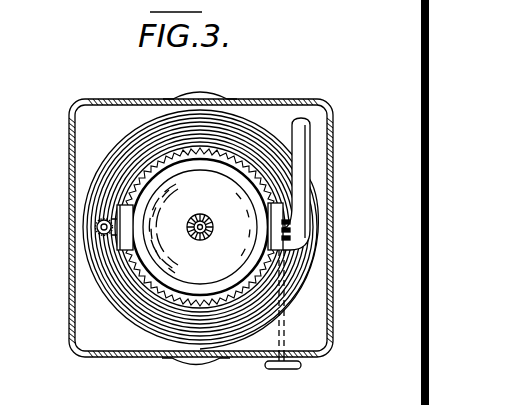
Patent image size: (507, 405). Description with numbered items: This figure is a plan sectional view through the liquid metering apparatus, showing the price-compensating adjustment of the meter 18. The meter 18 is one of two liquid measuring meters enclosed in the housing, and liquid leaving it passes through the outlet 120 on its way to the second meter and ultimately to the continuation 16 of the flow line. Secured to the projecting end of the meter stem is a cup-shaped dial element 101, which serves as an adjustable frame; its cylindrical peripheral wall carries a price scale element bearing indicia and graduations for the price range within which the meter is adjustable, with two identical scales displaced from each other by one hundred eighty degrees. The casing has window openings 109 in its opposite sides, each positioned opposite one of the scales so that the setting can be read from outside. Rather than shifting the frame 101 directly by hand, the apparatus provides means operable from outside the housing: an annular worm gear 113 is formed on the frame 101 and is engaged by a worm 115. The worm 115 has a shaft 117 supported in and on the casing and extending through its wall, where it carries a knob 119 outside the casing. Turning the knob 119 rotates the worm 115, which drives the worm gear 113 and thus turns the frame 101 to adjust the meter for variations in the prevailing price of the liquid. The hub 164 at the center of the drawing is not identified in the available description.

The continuation of the flow line 16 is at (306, 121).
The meter 18 is at (143, 246).
The cup-shaped dial element 101 is at (132, 316).
The window openings 109 is at (222, 91).
The annular worm gear 113 is at (145, 290).
The worm 115 is at (283, 251).
The shaft 117 is at (285, 308).
The knob 119 is at (284, 370).
The outlet 120 is at (96, 226).
The hub 164 is at (200, 214).